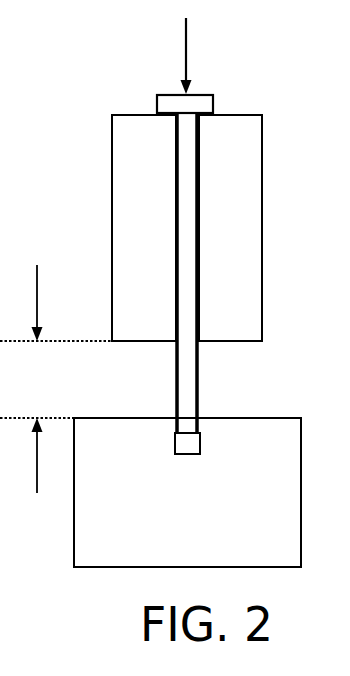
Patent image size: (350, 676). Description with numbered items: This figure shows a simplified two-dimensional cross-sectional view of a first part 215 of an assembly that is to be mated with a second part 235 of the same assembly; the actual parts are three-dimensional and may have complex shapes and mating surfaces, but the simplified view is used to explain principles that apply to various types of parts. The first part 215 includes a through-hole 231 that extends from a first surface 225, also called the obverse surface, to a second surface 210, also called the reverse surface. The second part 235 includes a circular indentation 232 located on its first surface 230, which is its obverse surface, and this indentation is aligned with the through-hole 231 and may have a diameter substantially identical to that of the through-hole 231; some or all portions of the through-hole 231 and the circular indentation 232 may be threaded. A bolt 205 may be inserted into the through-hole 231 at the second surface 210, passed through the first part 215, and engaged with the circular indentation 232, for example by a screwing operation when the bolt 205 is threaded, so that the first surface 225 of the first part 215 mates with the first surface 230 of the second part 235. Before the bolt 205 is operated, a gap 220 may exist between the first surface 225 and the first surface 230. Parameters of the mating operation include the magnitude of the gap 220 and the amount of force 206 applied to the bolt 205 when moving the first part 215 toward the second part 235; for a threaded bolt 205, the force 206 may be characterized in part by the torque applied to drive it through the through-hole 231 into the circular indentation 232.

The bolt 205 is at (214, 103).
The force 206 is at (185, 55).
The second surface 210 is at (255, 108).
The first part 215 is at (262, 190).
The gap 220 is at (56, 379).
The first surface 225 is at (242, 350).
The first surface 230 is at (275, 406).
The through-hole 231 is at (172, 353).
The circular indentation 232 is at (172, 401).
The second part 235 is at (203, 496).